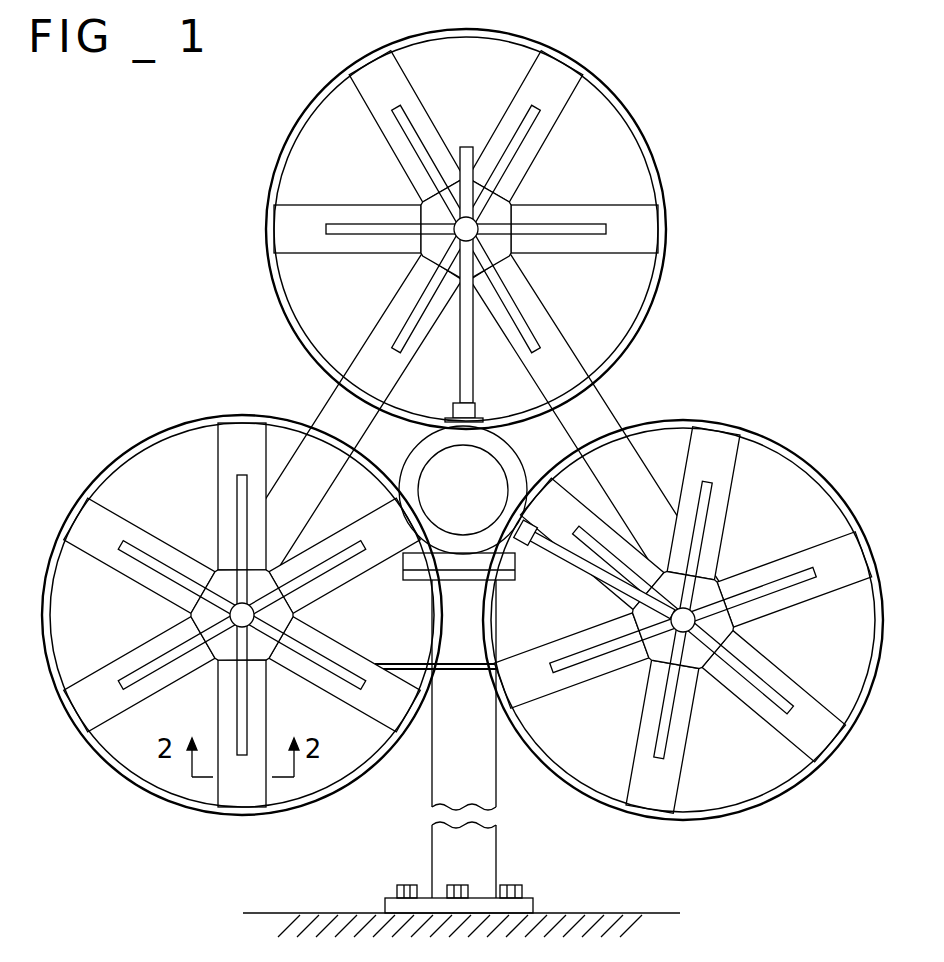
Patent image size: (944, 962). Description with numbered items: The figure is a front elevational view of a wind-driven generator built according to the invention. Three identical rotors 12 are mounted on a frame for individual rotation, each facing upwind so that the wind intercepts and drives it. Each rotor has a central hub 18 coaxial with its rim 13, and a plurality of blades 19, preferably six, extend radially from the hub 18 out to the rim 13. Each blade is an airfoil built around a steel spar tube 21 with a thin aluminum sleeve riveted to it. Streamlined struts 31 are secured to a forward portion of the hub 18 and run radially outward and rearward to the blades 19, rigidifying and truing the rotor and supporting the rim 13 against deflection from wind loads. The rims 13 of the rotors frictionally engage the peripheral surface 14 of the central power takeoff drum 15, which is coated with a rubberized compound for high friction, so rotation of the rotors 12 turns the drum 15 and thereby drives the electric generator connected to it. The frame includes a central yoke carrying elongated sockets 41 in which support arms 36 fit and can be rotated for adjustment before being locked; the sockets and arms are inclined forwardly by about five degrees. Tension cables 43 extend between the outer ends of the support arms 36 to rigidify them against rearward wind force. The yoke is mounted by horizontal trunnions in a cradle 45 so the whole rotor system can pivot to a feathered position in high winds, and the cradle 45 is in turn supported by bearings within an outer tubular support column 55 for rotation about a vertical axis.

The rotor 12 is at (674, 411).
The rim 13 is at (664, 284).
The peripheral surface 14 is at (517, 455).
The central power takeoff drum 15 is at (478, 502).
The central hub 18 is at (447, 231).
The blade 19 is at (402, 163).
The steel spar tube 21 is at (265, 622).
The streamlined strut 31 is at (536, 118).
The support arm 36 is at (458, 337).
The elongated socket 41 is at (477, 410).
The tension cable 43 is at (570, 323).
The cradle 45 is at (409, 593).
The outer tubular support column 55 is at (480, 790).